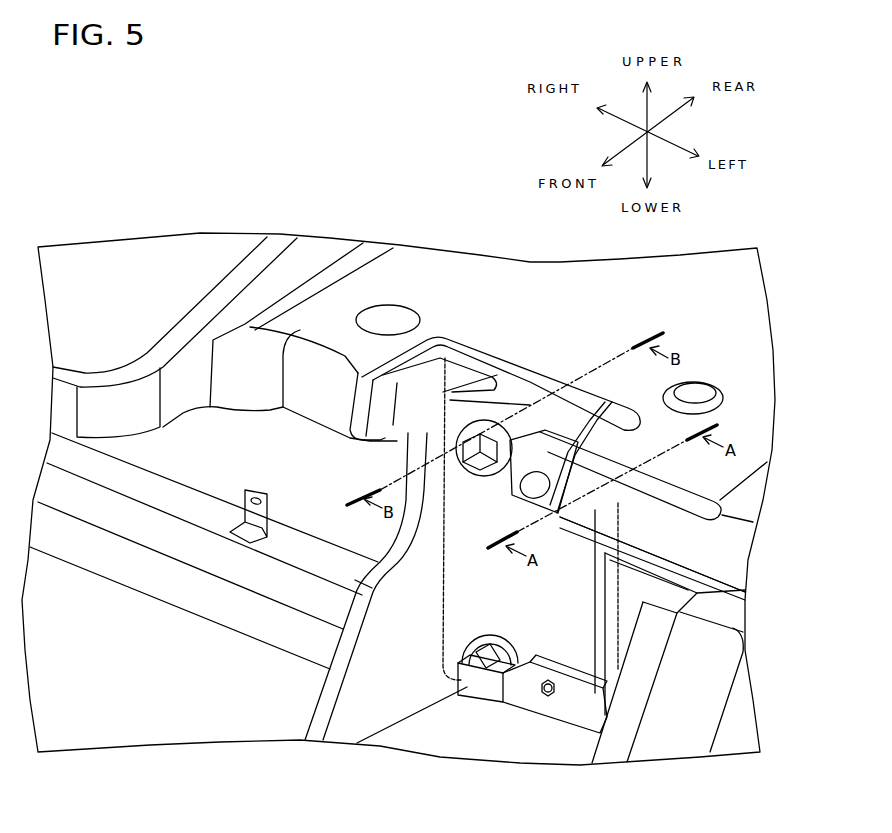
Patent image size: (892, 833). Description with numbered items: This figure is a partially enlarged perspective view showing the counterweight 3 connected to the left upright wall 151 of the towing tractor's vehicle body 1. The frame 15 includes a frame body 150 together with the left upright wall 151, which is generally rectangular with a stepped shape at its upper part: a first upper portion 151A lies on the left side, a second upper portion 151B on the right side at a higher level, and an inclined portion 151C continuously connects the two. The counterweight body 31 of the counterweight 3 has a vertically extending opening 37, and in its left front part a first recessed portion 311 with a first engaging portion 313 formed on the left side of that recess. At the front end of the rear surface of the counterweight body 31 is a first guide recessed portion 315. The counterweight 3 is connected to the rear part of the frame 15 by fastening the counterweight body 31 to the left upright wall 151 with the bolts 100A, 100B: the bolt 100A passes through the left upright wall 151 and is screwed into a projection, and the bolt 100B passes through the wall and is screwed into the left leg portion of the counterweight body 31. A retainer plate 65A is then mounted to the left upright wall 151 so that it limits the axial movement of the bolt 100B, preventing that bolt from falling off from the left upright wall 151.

The vehicle body 1 is at (401, 740).
The counterweight 3 is at (230, 422).
The frame 15 is at (100, 580).
The frame body 150 is at (222, 604).
The counterweight body 31 is at (473, 283).
The opening 37 is at (126, 272).
The retainer plate 65A is at (477, 680).
The bolt 100A is at (452, 500).
The bolt 100B is at (492, 660).
The left upright wall 151 is at (457, 635).
The first upper portion 151A is at (598, 485).
The second upper portion 151B is at (502, 403).
The inclined portion 151C is at (600, 384).
The first recessed portion 311 is at (400, 425).
The first engaging portion 313 is at (510, 500).
The first guide recessed portion 315 is at (565, 443).